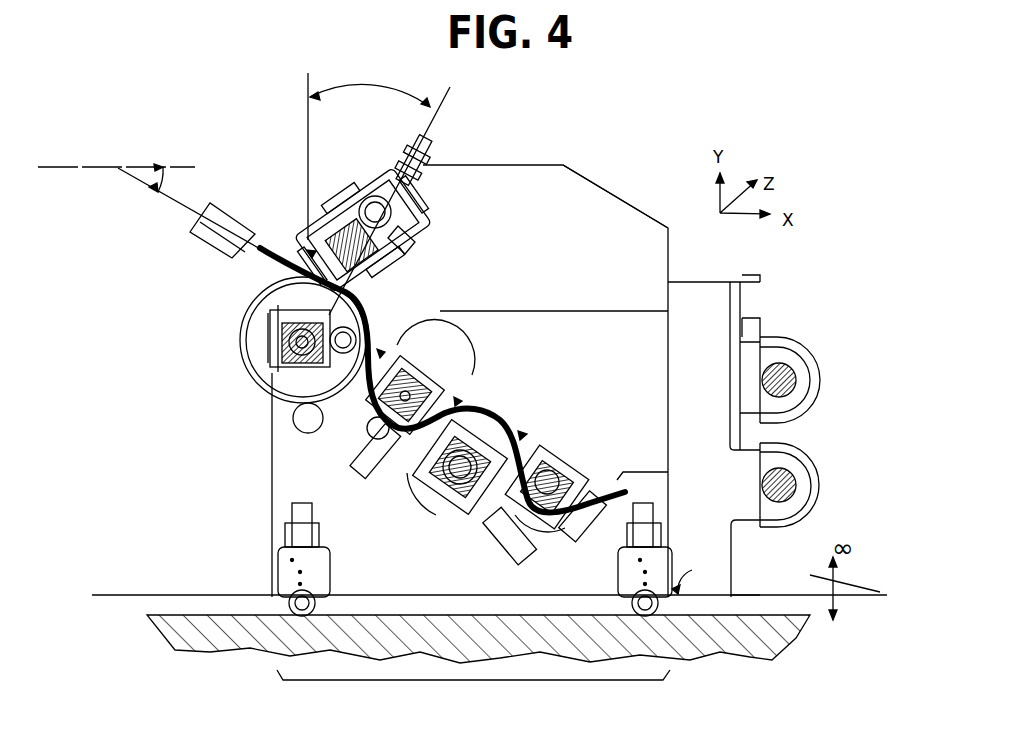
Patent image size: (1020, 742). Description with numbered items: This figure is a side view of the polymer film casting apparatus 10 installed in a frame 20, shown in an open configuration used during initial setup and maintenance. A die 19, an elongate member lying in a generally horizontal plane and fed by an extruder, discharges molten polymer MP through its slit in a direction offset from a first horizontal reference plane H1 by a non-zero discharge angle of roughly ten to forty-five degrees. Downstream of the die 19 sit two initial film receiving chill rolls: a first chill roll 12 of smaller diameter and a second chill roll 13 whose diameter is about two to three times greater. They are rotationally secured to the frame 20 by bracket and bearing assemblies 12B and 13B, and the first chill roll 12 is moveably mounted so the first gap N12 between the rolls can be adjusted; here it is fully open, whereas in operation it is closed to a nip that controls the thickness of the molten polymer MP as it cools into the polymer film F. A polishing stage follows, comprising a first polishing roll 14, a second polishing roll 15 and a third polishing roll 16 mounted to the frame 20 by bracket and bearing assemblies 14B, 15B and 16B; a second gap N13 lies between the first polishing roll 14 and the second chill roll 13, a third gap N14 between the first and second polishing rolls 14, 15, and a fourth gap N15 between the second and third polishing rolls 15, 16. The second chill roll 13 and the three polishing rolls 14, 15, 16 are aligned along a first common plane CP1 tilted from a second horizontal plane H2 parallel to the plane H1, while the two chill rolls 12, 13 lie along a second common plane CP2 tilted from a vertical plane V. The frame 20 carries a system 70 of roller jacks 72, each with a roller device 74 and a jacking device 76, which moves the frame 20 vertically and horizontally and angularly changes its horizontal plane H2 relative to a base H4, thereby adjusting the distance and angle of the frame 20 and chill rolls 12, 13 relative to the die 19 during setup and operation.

The casting apparatus 10 is at (265, 462).
The first chill roll 12 is at (345, 207).
The bracket and bearing assembly 12B is at (407, 232).
The second chill roll 13 is at (250, 384).
The bracket and bearing assembly 13B is at (268, 346).
The first polishing roll 14 is at (425, 387).
The bracket and bearing assembly 14B is at (368, 458).
The second polishing roll 15 is at (440, 510).
The bracket and bearing assembly 15B is at (445, 502).
The third polishing roll 16 is at (590, 480).
The bracket and bearing assembly 16B is at (595, 532).
The die 19 is at (197, 240).
The frame 20 is at (595, 202).
The system for vertical movement 70 is at (448, 682).
The roller jacks 72 is at (285, 566).
The roller device 74 is at (338, 618).
The support post 76 is at (315, 520).
The molten polymer MP is at (265, 272).
The first gap N12 is at (312, 258).
The second gap N13 is at (380, 358).
The third gap N14 is at (455, 406).
The fourth gap N15 is at (520, 440).
The vertical plane V is at (308, 134).
The first common plane CP1 is at (733, 595).
The second common plane CP2 is at (423, 138).
The first horizontal reference plane H1 is at (78, 167).
The second horizontal plane H2 is at (132, 595).
The base H4 is at (808, 632).
The polymer film F is at (614, 512).